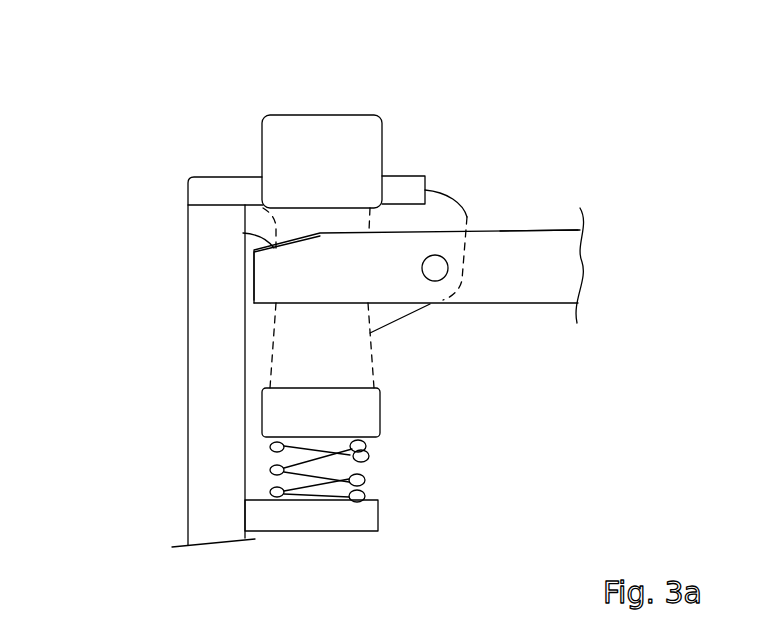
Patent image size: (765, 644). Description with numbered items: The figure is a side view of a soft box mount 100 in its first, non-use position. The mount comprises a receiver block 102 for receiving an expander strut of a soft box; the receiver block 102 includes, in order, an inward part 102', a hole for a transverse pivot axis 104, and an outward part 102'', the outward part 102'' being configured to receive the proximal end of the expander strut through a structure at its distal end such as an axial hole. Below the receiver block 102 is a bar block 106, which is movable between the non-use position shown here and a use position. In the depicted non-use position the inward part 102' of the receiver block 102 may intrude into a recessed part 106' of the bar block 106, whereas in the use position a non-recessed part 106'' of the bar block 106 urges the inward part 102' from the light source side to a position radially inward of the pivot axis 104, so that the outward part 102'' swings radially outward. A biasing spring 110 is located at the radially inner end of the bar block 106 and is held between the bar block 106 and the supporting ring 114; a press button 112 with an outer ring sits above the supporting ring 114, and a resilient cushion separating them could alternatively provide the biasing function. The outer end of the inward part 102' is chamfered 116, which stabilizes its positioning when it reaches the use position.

The soft box mount 100 is at (502, 135).
The receiver block 102 is at (465, 242).
The inward part 102' is at (307, 268).
The outward part 102'' is at (539, 259).
The transverse pivot axis 104 is at (437, 266).
The bar block 106 is at (422, 309).
The recessed part 106' is at (322, 345).
The non-recessed part 106'' is at (321, 412).
The biasing spring 110 is at (366, 482).
The press button 112 is at (348, 165).
The supporting ring 114 is at (222, 177).
The chamfer 116 is at (243, 233).